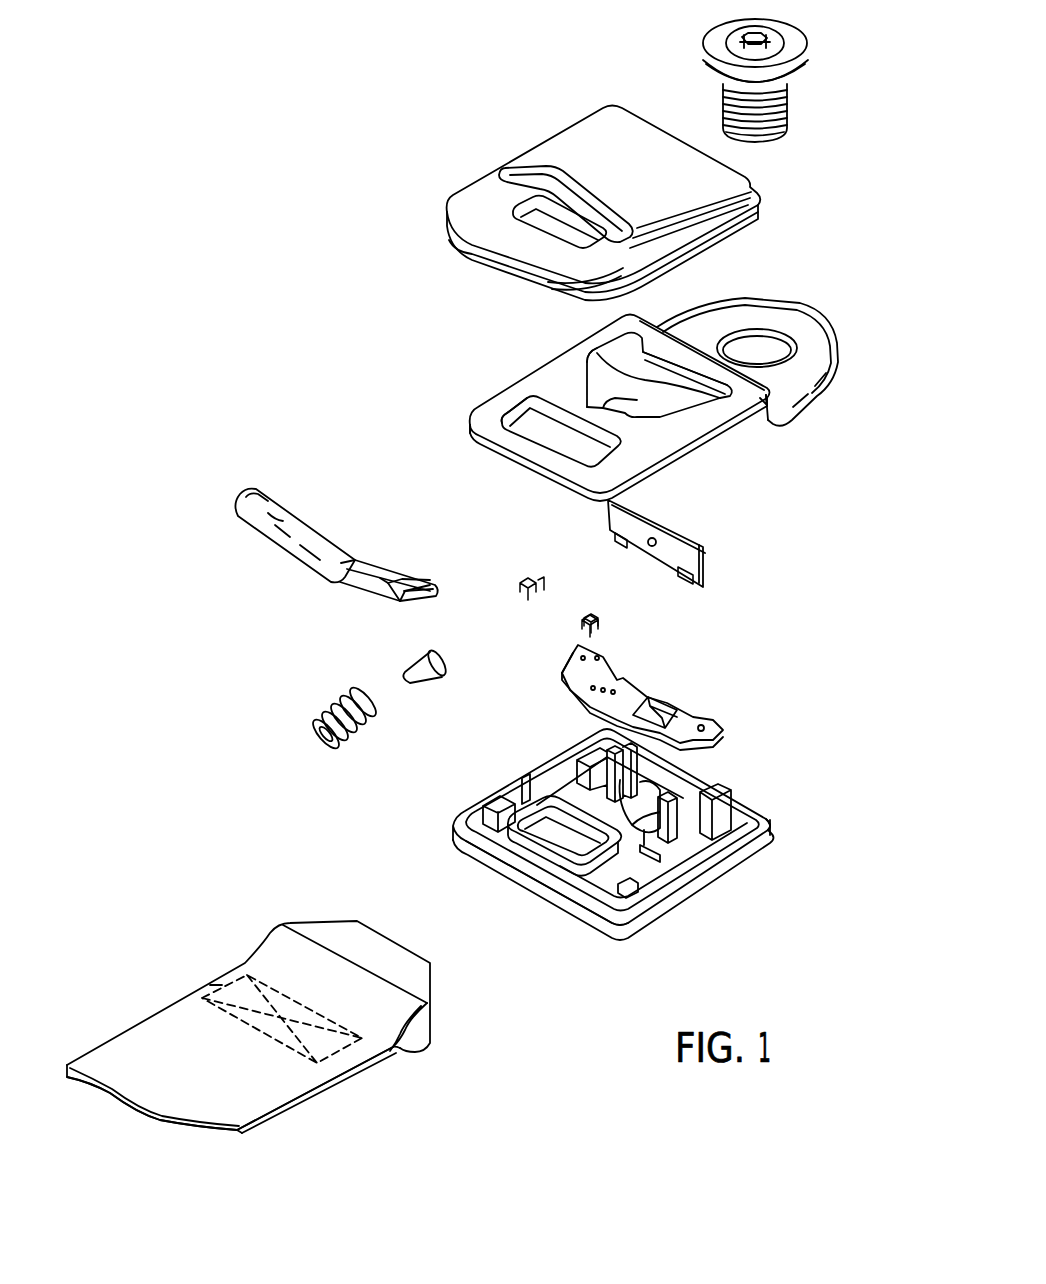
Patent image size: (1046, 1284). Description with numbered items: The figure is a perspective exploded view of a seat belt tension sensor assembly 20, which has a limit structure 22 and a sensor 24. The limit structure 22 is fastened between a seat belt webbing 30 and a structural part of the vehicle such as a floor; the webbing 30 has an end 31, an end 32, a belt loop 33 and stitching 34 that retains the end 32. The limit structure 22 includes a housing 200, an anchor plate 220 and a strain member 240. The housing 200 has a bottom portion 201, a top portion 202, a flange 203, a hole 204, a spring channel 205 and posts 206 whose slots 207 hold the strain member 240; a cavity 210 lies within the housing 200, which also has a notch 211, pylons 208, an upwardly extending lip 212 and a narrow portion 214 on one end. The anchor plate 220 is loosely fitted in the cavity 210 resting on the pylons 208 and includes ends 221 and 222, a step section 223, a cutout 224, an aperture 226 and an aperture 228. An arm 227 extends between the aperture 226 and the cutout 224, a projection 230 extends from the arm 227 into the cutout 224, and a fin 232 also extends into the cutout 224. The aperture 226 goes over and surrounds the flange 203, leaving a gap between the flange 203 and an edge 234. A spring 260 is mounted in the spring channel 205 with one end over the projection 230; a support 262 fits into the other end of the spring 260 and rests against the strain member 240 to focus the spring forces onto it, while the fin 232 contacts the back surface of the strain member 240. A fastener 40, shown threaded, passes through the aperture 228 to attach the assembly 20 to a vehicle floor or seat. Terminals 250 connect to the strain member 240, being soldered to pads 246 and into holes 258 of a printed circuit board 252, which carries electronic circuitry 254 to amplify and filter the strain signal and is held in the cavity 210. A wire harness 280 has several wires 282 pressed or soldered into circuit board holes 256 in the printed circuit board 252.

The seat belt tension sensor assembly 20 is at (272, 60).
The limit structure 22 is at (293, 317).
The sensor 24 is at (778, 598).
The seat belt webbing 30 is at (135, 1020).
The end 31 is at (165, 1127).
The end 32 is at (352, 1070).
The belt loop 33 is at (433, 1023).
The stitching 34 is at (220, 984).
The fastener 40 is at (712, 45).
The housing 200 is at (714, 899).
The bottom portion 201 is at (747, 877).
The top portion 202 is at (565, 125).
The flange 203 is at (538, 853).
The hole 204 is at (545, 222).
The spring channel 205 is at (645, 845).
The posts 206 is at (733, 799).
The slots 207 is at (703, 783).
The pylons 208 is at (629, 895).
The cavity 210 is at (579, 799).
The notch 211 is at (513, 783).
The upwardly extending lip 212 is at (757, 831).
The narrow portion 214 is at (470, 203).
The anchor plate 220 is at (464, 409).
The end 221 is at (470, 432).
The end 222 is at (833, 332).
The step section 223 is at (774, 424).
The cutout 224 is at (676, 405).
The aperture 226 is at (538, 432).
The arm 227 is at (573, 397).
The aperture 228 is at (753, 350).
The projection 230 is at (637, 417).
The fin 232 is at (603, 367).
The edge 234 is at (517, 410).
The strain member 240 is at (705, 563).
The pads 246 is at (680, 579).
The terminals 250 is at (533, 580).
The printed circuit board 252 is at (717, 718).
The electronic circuitry 254 is at (655, 713).
The circuit board holes 256 is at (567, 653).
The holes 258 is at (603, 670).
The spring 260 is at (343, 697).
The support 262 is at (405, 675).
The wire harness 280 is at (271, 548).
The wires 282 is at (388, 580).